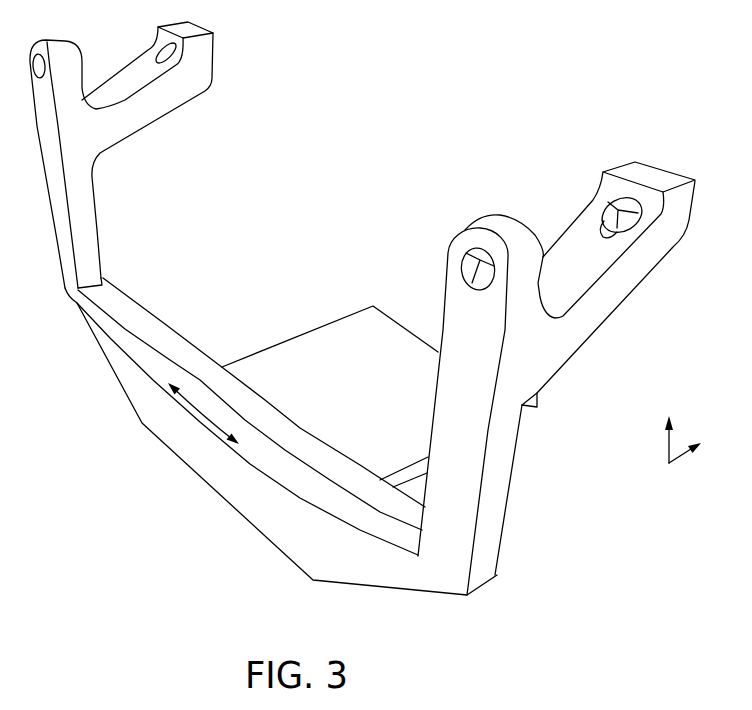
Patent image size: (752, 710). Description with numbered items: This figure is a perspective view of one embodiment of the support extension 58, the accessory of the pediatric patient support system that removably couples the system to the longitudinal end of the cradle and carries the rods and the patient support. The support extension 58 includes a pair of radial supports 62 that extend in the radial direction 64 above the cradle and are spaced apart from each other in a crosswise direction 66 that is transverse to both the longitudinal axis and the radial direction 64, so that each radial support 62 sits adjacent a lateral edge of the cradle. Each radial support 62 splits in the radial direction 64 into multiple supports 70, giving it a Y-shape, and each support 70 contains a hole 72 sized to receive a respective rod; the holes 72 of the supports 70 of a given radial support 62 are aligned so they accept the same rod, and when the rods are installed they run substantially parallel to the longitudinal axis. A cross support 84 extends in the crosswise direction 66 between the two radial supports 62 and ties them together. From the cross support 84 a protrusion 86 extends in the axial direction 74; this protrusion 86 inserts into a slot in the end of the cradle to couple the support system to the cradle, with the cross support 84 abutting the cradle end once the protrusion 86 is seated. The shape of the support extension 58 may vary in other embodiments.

The support extension 58 is at (170, 476).
The radial support 62 is at (460, 502).
The cross support 84 is at (118, 323).
The support 70 is at (527, 267).
The hole 72 is at (475, 278).
The protrusion 86 is at (297, 336).
The direction 66 is at (200, 412).
The radial direction 64 is at (662, 447).
The axial direction 74 is at (687, 460).